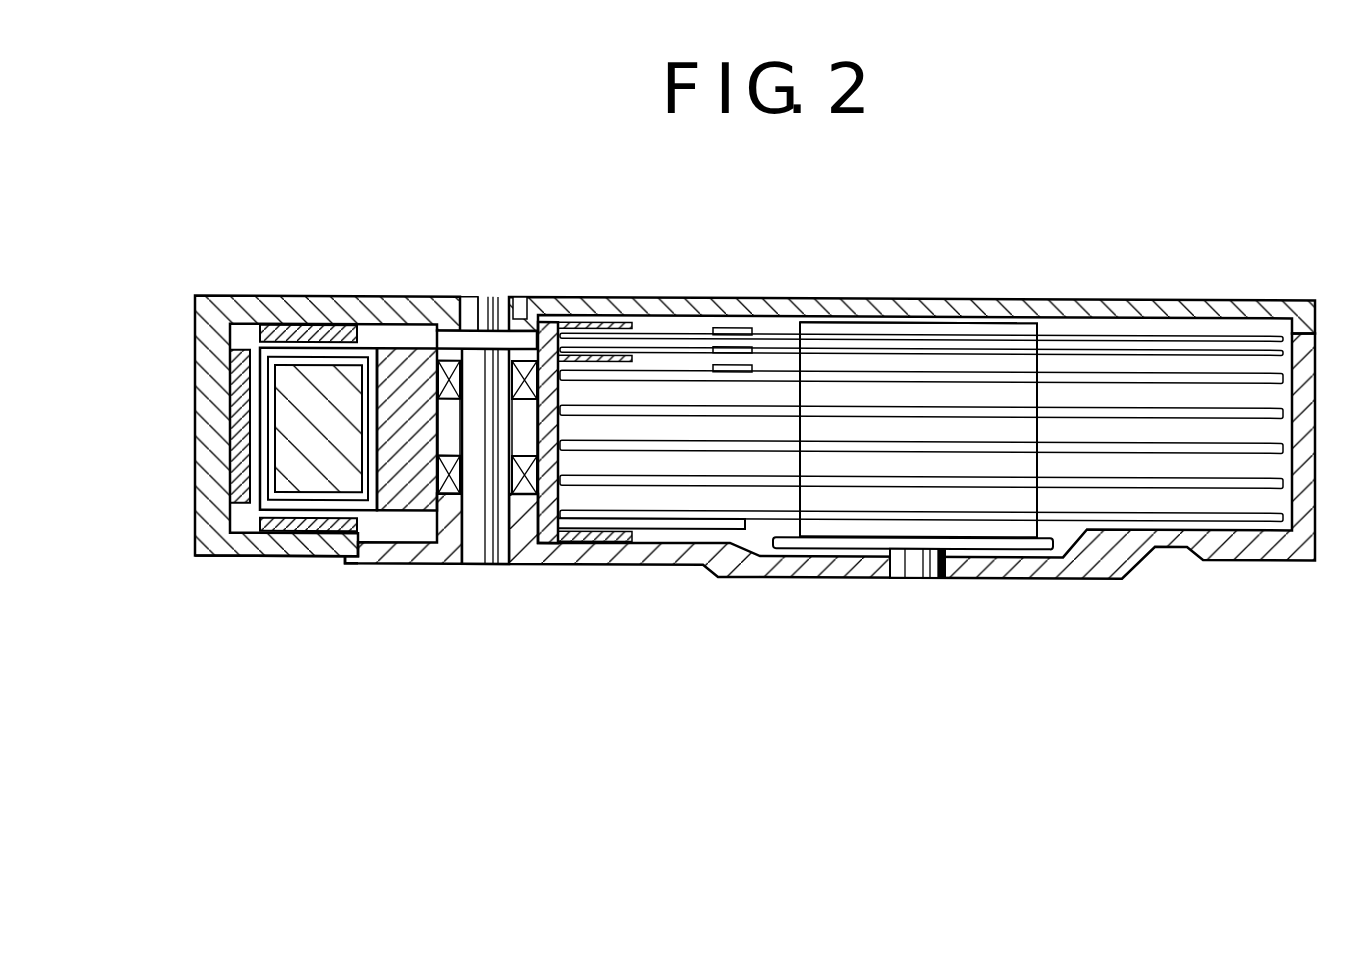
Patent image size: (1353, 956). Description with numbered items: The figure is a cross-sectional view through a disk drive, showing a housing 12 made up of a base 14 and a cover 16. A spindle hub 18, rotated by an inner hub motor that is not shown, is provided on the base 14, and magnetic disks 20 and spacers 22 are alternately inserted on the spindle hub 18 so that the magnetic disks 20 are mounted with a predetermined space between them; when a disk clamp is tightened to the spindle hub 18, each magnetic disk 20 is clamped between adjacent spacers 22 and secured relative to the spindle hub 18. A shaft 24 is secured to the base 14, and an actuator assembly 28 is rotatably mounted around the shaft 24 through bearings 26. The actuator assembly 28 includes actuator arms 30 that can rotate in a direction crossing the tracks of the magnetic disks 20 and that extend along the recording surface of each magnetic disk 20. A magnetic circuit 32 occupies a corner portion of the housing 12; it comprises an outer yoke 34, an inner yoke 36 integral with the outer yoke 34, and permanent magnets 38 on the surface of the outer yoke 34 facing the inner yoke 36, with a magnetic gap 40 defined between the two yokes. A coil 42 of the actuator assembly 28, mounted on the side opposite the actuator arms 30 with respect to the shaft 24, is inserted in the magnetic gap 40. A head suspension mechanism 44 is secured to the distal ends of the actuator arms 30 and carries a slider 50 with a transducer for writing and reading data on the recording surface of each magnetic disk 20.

The housing 12 is at (902, 592).
The base 14 is at (1000, 567).
The cover 16 is at (813, 300).
The spindle hub 18 is at (979, 318).
The magnetic disks 20 is at (1160, 342).
The spacers 22 is at (900, 362).
The shaft 24 is at (482, 565).
The bearings 26 is at (522, 365).
The actuator assembly 28 is at (400, 338).
The actuator arms 30 is at (604, 357).
The magnetic circuit 32 is at (270, 290).
The outer yoke 34 is at (225, 560).
The inner yoke 36 is at (343, 475).
The permanent magnets 38 is at (313, 328).
The magnetic gap 40 is at (255, 394).
The coil 42 is at (258, 393).
The head suspension mechanism 44 is at (678, 322).
The slider 50 is at (738, 330).